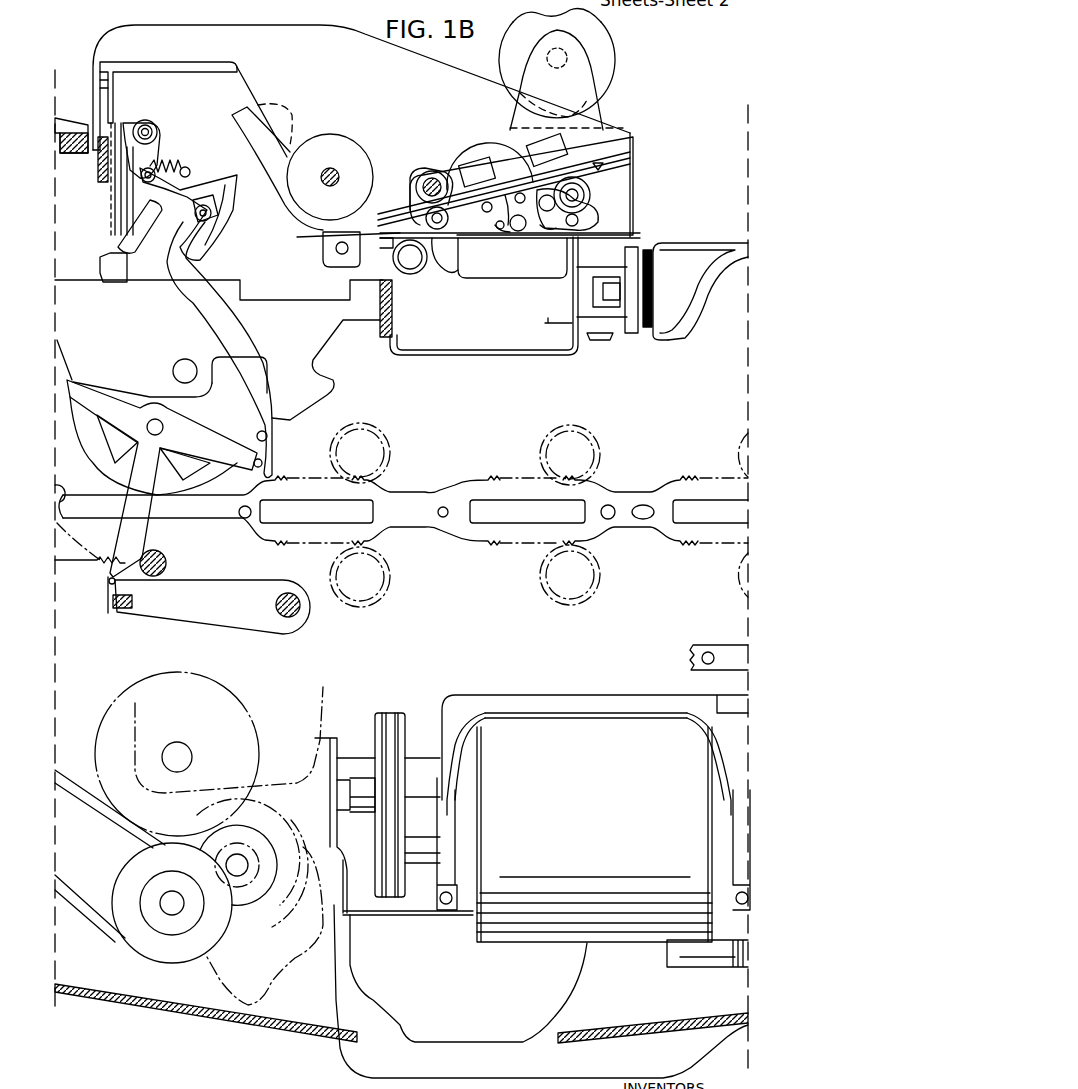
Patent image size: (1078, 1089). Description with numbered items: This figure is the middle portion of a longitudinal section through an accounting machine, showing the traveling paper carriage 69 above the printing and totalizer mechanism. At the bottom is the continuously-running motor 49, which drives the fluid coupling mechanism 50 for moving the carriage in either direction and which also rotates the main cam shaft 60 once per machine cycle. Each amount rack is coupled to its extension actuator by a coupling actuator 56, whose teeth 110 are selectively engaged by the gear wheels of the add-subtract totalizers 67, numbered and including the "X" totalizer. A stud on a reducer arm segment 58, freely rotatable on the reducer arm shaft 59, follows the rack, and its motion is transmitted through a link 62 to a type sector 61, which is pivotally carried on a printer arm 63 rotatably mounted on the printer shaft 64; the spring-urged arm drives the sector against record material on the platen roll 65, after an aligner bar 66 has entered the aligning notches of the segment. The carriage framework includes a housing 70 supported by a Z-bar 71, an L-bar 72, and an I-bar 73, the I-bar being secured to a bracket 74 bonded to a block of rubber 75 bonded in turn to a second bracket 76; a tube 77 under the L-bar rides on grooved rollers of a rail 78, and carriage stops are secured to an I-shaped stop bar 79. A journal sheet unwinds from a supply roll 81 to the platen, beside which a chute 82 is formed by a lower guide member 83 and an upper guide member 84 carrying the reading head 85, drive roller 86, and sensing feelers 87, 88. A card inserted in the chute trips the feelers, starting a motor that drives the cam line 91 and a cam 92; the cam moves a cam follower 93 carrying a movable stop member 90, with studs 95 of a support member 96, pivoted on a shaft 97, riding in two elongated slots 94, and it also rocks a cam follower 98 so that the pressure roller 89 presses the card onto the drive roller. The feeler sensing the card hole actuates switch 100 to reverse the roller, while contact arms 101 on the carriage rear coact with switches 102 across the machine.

The motor 49 is at (473, 920).
The fluid coupling mechanism 50 is at (397, 1020).
The coupling actuator 56 is at (623, 527).
The reducer arm segment 58 is at (156, 541).
The reducer arm shaft 59 is at (167, 423).
The main cam shaft 60 is at (179, 742).
The type sector 61 is at (235, 192).
The link 62 is at (240, 330).
The printer arm 63 is at (133, 225).
The printer shaft 64 is at (176, 366).
The platen roll 65 is at (313, 133).
The aligner bar 66 is at (140, 623).
The add-subtract totalizers 67 is at (372, 425).
The traveling paper carriage 69 is at (148, 25).
The housing 70 is at (377, 40).
The Z-bar 71 is at (567, 303).
The L-bar 72 is at (412, 262).
The I-bar 73 is at (118, 135).
The bracket 74 is at (93, 67).
The block of rubber 75 is at (98, 78).
The second bracket 76 is at (178, 72).
The tube 77 is at (366, 235).
The rail 78 is at (390, 340).
The I-shaped stop bar 79 is at (63, 157).
The supply roll 81 is at (603, 40).
The chute 82 is at (304, 246).
The lower guide member 83 is at (288, 222).
The upper guide member 84 is at (395, 207).
The reading head 85 is at (443, 168).
The drive roller 86 is at (427, 172).
The sensing feelers 87 is at (490, 165).
The sensing feeler 88 is at (630, 137).
The pressure roller 89 is at (428, 220).
The movable stop member 90 is at (465, 227).
The cam line 91 is at (495, 142).
The cam 92 is at (590, 192).
The cam follower 93 is at (548, 228).
The elongated slots 94 is at (505, 235).
The stud 95 is at (515, 200).
The support member 96 is at (520, 228).
The shaft 97 is at (552, 240).
The cam follower 98 is at (460, 240).
The switch 100 is at (583, 112).
The contact arms 101 is at (633, 247).
The switches 102 is at (648, 247).
The teeth 110 is at (492, 475).